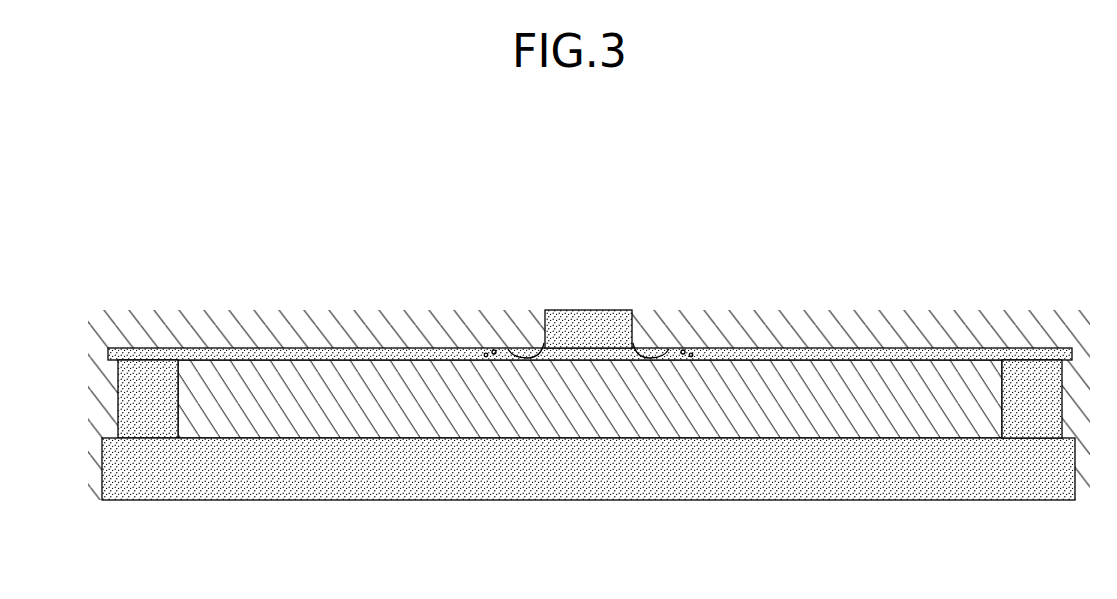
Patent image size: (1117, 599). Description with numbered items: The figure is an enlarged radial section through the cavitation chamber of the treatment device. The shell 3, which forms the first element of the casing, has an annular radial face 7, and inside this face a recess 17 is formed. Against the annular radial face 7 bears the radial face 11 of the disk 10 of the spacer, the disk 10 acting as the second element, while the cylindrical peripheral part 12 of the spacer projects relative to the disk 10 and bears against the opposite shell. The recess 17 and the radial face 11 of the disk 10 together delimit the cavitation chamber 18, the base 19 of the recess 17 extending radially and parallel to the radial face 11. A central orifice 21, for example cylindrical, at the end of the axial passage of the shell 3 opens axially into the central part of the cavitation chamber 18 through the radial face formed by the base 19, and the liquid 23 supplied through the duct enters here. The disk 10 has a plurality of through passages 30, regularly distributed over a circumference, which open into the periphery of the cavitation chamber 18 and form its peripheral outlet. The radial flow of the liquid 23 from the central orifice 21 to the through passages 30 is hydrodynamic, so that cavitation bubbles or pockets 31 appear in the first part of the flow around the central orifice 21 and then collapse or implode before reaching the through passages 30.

The shell 3 is at (362, 316).
The annular radial face 7 is at (107, 362).
The disk 10 is at (525, 441).
The radial face 11 is at (293, 348).
The cylindrical peripheral part 12 is at (95, 458).
The recess 17 is at (930, 348).
The cavitation chamber 18 is at (816, 351).
The base of the recess 19 is at (350, 350).
The central orifice 21 is at (632, 330).
The liquid 23 is at (805, 465).
The through passages 30 is at (175, 403).
The cavitation bubbles or pockets 31 is at (663, 348).